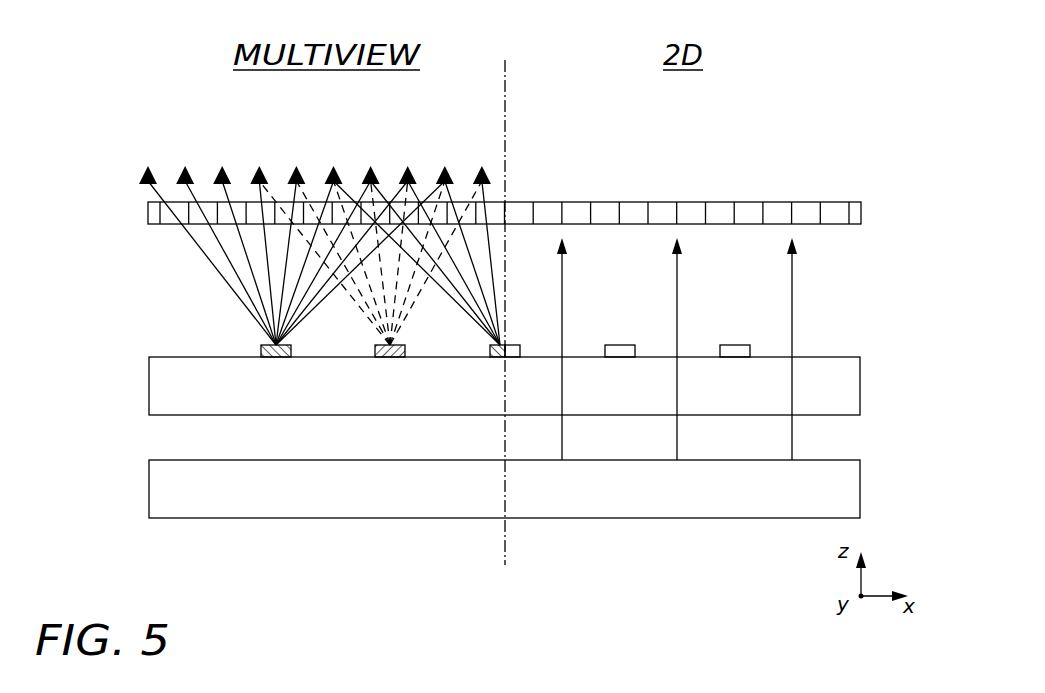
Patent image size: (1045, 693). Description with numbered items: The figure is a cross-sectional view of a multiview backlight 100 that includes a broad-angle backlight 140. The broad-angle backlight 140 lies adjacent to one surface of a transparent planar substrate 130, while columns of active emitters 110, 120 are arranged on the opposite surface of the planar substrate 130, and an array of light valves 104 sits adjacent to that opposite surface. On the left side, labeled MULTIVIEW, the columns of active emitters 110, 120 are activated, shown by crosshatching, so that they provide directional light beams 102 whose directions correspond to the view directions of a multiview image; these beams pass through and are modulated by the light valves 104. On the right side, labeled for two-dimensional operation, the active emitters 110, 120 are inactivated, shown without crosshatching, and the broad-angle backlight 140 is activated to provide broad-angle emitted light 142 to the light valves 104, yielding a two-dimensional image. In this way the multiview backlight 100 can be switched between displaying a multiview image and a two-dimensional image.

The multiview backlight 100 is at (819, 91).
The directional light beams 102 is at (197, 269).
The light valves 104 is at (137, 207).
The active emitters of the first array 110 is at (246, 338).
The active emitters of the second array 120 is at (393, 374).
The planar substrate 130 is at (153, 386).
The broad-angle backlight 140 is at (153, 488).
The broad-angle emitted light 142 is at (840, 252).